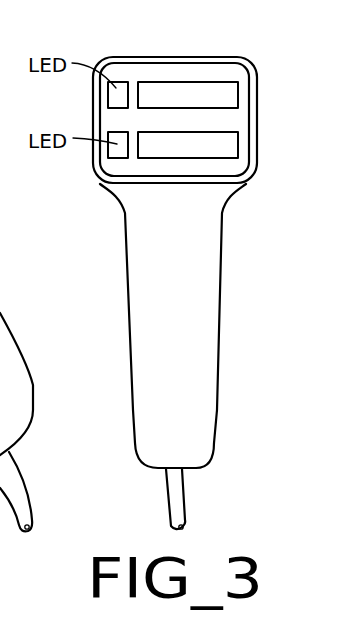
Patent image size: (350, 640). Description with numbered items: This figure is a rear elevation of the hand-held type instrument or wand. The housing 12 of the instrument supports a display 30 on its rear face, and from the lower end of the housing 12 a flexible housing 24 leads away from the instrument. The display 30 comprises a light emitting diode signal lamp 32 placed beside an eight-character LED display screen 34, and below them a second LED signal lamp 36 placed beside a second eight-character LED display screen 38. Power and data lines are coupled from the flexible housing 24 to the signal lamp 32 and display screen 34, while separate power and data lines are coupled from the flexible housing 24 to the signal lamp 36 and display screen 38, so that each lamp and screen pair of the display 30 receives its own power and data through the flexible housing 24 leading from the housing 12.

The display 30 is at (140, 49).
The light emitting diode (LED) signal lamp 32 is at (116, 95).
The 8-character LED display screen 34 is at (238, 80).
The LED signal lamp 36 is at (118, 152).
The 8-character LED display screen 38 is at (235, 153).
The housing 12 is at (220, 298).
The flexible housing 24 is at (185, 515).